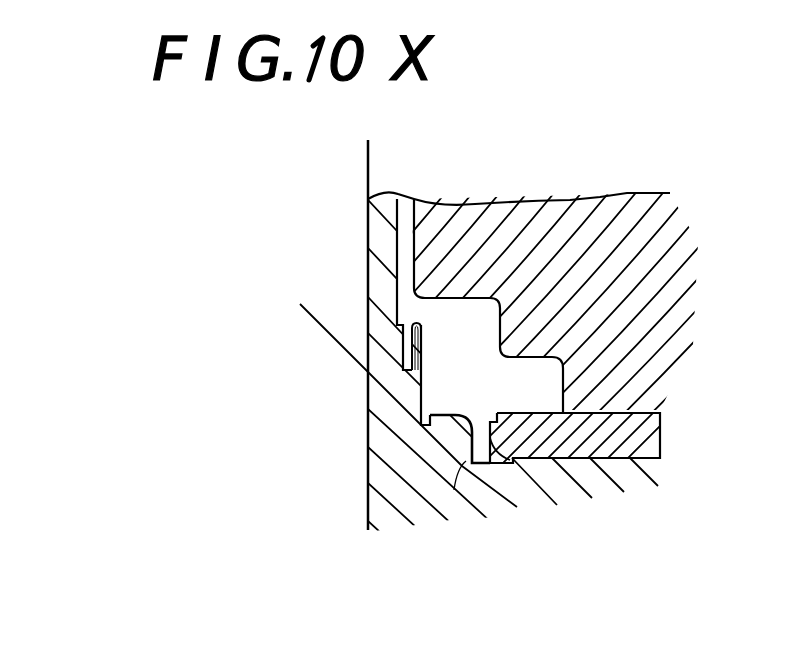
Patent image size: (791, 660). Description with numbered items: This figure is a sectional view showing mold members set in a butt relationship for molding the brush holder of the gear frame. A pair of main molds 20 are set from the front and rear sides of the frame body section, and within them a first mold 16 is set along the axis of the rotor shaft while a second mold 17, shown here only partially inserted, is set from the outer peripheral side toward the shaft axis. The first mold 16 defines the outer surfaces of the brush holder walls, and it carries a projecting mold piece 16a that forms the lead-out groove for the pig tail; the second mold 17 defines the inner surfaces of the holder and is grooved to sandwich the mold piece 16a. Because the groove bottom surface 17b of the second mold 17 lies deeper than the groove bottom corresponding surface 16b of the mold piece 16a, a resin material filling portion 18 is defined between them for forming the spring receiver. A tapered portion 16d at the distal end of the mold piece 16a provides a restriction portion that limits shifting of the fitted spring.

The first mold 16 is at (432, 487).
The mold piece 16a is at (440, 443).
The groove bottom corresponding surface 16b is at (468, 461).
The tapered portion 16d is at (457, 416).
The second mold 17 is at (682, 376).
The groove bottom surface 17b is at (512, 463).
The resin material filling portion 18 is at (480, 452).
The main mold 20 is at (602, 230).